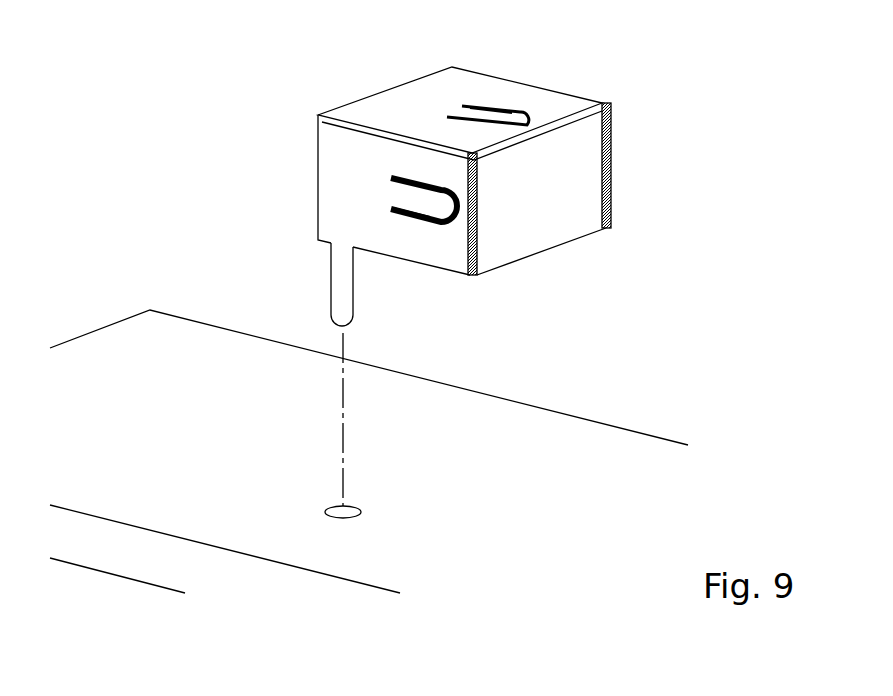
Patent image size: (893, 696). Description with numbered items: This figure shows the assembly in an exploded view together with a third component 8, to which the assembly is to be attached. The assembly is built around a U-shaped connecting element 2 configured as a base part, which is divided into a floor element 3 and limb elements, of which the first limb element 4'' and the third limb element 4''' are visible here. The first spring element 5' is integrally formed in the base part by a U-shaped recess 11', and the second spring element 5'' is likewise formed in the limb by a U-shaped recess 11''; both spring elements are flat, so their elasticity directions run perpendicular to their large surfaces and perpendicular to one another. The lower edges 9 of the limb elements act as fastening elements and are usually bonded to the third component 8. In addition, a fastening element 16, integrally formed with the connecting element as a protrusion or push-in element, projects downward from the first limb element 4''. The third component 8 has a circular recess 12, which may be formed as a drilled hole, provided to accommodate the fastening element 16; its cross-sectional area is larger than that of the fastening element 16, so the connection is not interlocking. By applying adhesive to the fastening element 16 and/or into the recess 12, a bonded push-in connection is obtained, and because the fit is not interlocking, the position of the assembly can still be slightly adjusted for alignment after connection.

The connecting element 2 is at (467, 182).
The floor element 3 is at (463, 87).
The first limb element 4'' is at (347, 195).
The third limb element 4''' is at (593, 189).
The first spring element 5' is at (533, 62).
The second spring element 5'' is at (424, 270).
The third component 8 is at (559, 470).
The edge 9 is at (455, 272).
The first U-shaped recess 11' is at (514, 62).
The second U-shaped recess 11'' is at (405, 257).
The circular recess 12 is at (333, 517).
The fastening element 16 is at (347, 285).